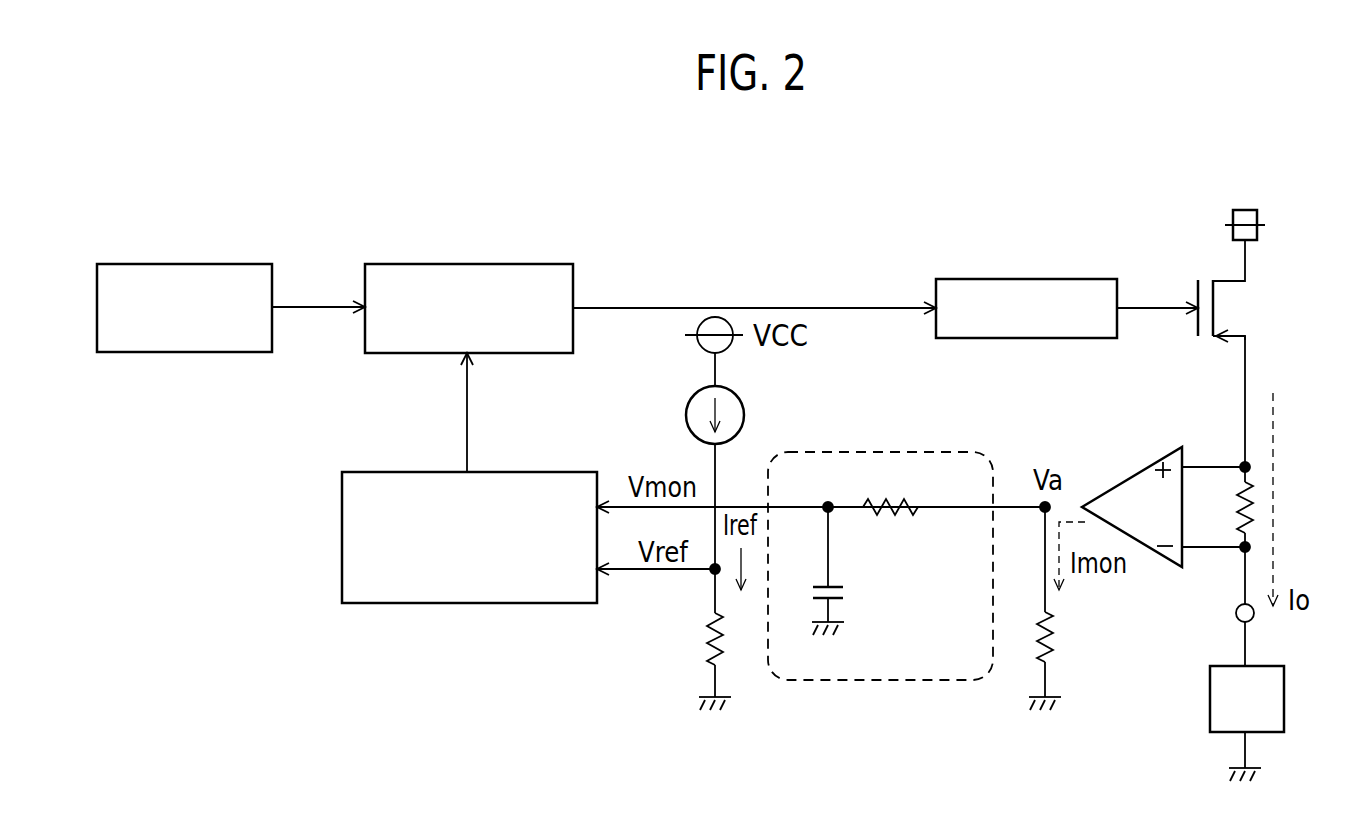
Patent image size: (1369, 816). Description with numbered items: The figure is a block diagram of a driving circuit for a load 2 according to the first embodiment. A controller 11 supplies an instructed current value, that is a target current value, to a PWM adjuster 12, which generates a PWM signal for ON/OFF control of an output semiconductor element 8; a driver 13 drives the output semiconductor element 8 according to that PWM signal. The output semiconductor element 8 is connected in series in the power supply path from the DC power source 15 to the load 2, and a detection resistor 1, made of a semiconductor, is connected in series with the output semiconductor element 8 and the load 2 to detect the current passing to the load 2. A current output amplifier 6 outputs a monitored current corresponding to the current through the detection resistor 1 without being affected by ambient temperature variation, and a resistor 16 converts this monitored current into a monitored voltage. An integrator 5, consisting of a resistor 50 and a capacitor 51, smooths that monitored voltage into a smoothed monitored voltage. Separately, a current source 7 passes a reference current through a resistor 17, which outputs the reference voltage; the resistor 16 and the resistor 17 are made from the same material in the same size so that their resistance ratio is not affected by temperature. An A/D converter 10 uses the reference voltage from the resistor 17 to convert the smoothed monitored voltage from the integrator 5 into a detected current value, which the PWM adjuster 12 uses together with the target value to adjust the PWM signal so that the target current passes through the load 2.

The detection resistor 1 is at (1257, 505).
The load 2 is at (1284, 692).
The integrator 5 is at (866, 452).
The current output amplifier 6 is at (1117, 478).
The current source 7 is at (686, 413).
The output semiconductor element 8 is at (1224, 308).
The A/D converter 10 is at (342, 545).
The controller 11 is at (222, 264).
The PWM adjuster 12 is at (463, 264).
The driver 13 is at (1030, 279).
The power source 15 is at (1257, 228).
The resistor 16 is at (1062, 628).
The resistor 17 is at (708, 638).
The resistor 50 is at (888, 517).
The capacitor 51 is at (845, 592).